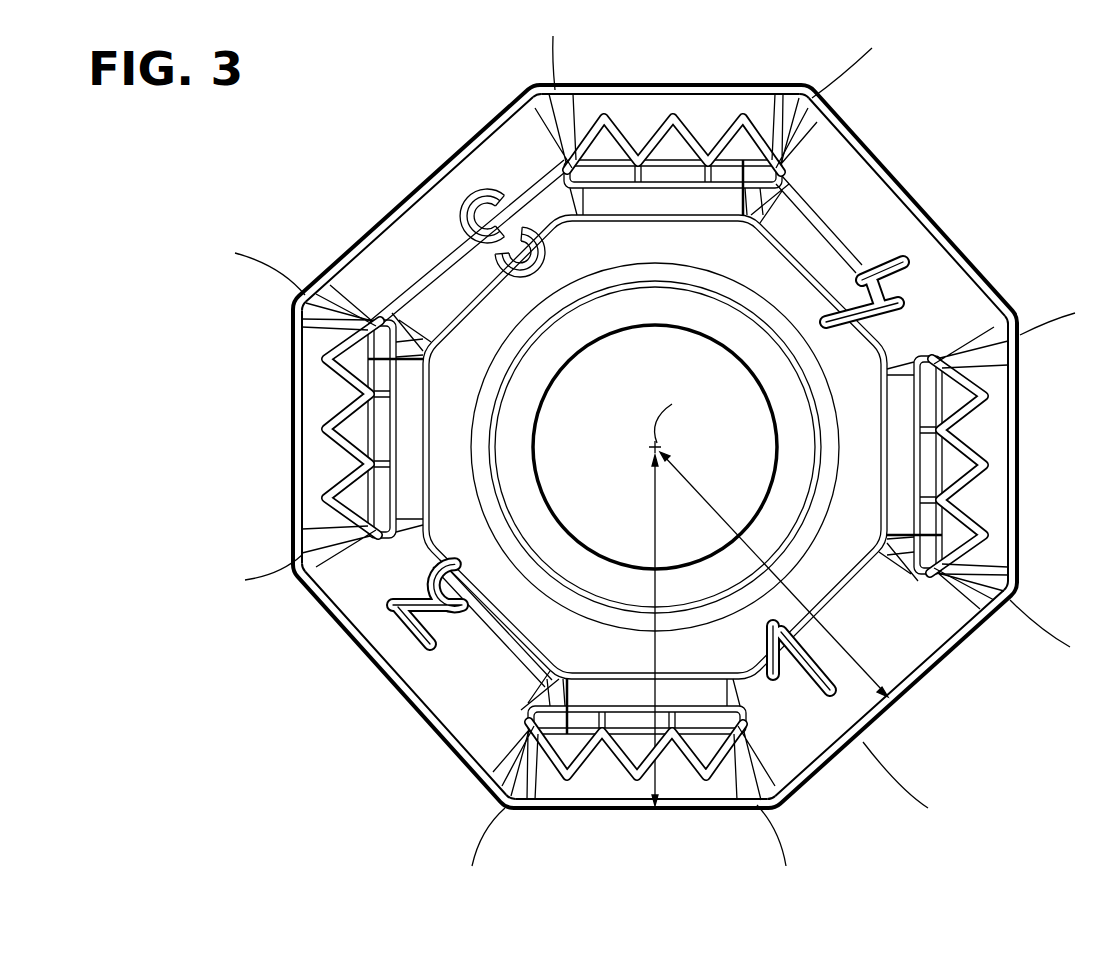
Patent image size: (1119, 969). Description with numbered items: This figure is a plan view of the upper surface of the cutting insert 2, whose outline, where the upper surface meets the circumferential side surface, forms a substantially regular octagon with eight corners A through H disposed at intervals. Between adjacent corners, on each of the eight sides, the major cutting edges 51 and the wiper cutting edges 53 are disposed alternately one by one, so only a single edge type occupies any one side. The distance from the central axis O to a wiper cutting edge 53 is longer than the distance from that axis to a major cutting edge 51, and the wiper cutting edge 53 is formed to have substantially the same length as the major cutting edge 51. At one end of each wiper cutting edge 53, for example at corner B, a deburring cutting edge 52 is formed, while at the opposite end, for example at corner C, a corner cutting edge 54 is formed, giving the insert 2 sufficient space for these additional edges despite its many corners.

The cutting insert 2 is at (684, 889).
The major cutting edge 51 is at (415, 185).
The deburring cutting edge 52 is at (530, 97).
The wiper cutting edge 53 is at (660, 85).
The corner cutting edge 54 is at (795, 90).